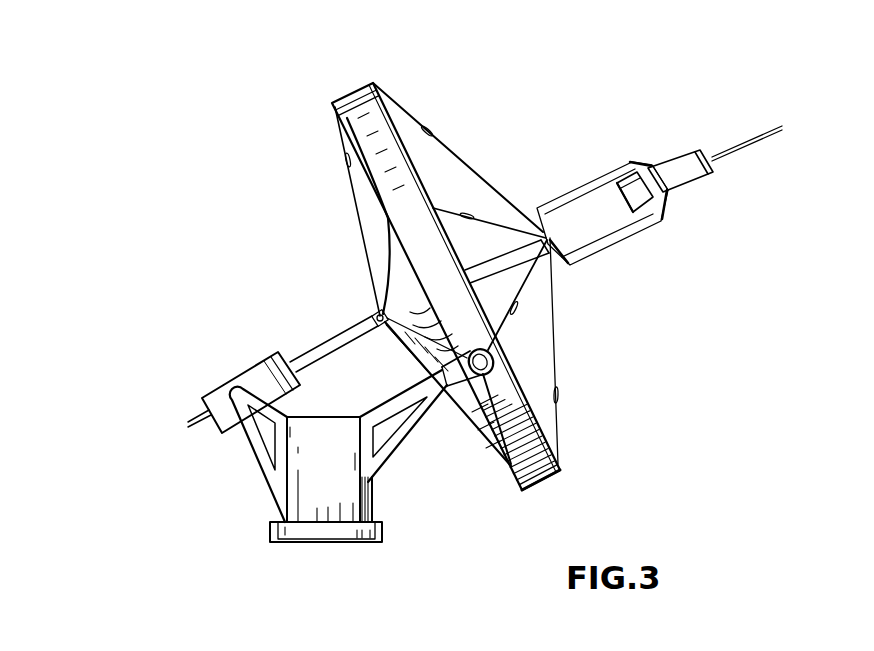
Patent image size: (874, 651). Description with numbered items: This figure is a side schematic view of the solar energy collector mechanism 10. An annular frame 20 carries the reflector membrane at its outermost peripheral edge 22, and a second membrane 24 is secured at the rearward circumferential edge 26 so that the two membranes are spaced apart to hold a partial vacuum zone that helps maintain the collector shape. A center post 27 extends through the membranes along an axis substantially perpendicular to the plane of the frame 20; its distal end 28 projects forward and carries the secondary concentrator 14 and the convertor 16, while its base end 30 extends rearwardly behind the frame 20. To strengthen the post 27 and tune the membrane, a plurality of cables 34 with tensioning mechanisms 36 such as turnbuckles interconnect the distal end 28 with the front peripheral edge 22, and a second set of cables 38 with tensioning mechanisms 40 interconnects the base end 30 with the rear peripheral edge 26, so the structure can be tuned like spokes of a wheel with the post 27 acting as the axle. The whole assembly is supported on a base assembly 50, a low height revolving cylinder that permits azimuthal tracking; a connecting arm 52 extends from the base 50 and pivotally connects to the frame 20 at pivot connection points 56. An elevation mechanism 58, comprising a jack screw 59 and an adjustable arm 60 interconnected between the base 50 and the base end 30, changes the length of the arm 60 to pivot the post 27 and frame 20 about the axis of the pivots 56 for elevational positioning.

The solar energy collector mechanism 10 is at (190, 126).
The secondary concentrator 14 is at (630, 187).
The convertor 16 is at (682, 168).
The frame 20 is at (357, 106).
The outermost peripheral edge 22 is at (381, 93).
The second membrane 24 is at (372, 213).
The rearward circumferential edge 26 is at (352, 152).
The center post 27 is at (497, 263).
The distal end 28 is at (548, 237).
The base end 30 is at (380, 312).
The cables 34 is at (465, 162).
The tensioning mechanism 36 is at (430, 130).
The second set of cables 38 is at (387, 280).
The tensioning mechanisms 40 is at (387, 247).
The base assembly 50 is at (320, 487).
The connecting arm 52 is at (398, 437).
The pivot connection points 56 is at (500, 348).
The elevation mechanism 58 is at (232, 372).
The jack screw 59 is at (278, 355).
The adjustable arm 60 is at (326, 352).